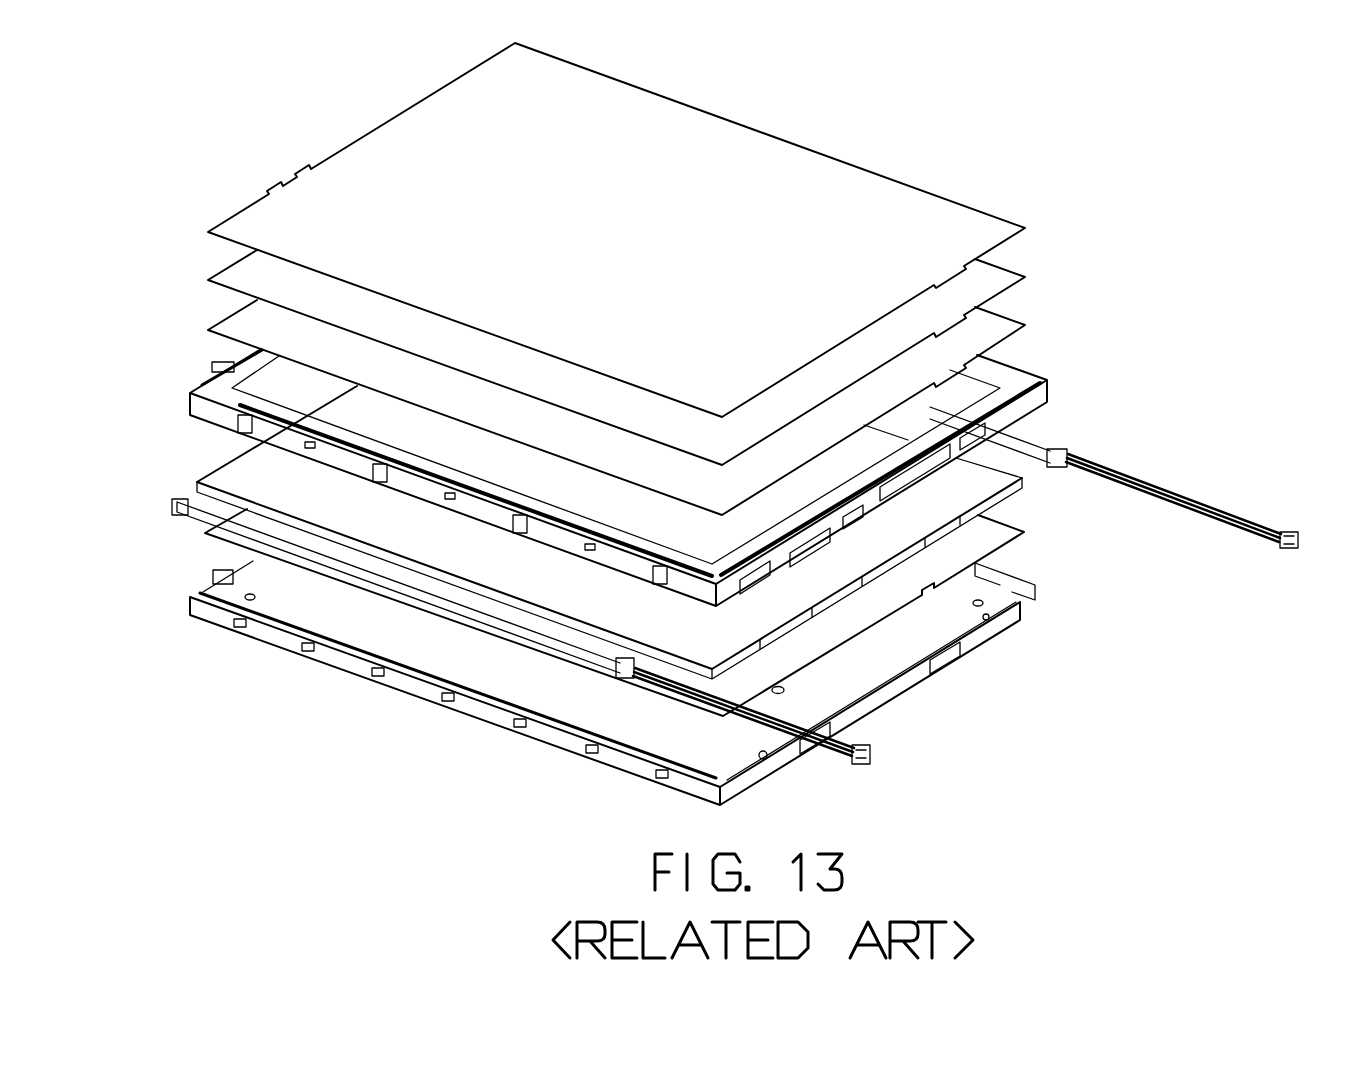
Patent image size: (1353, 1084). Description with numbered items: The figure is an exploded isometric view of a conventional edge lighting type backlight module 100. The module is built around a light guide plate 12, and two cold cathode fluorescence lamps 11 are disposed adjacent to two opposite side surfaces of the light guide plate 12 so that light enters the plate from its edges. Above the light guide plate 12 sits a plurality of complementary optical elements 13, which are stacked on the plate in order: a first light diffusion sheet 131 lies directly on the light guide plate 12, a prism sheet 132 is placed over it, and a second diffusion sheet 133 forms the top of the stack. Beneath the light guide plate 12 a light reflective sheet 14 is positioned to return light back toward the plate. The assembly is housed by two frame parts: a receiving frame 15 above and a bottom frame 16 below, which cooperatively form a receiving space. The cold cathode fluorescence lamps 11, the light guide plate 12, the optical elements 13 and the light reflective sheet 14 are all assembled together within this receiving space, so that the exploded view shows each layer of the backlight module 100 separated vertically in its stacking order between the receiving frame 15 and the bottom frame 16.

The backlight module 100 is at (338, 111).
The complementary optical elements 13 is at (201, 218).
The second diffusion sheet 133 is at (872, 207).
The prism sheet 132 is at (985, 287).
The first light diffusion sheet 131 is at (985, 333).
The receiving frame 15 is at (1050, 387).
The cold cathode fluorescence lamps 11 is at (1047, 443).
The light guide plate 12 is at (258, 483).
The light reflective sheet 14 is at (993, 535).
The bottom frame 16 is at (1013, 580).